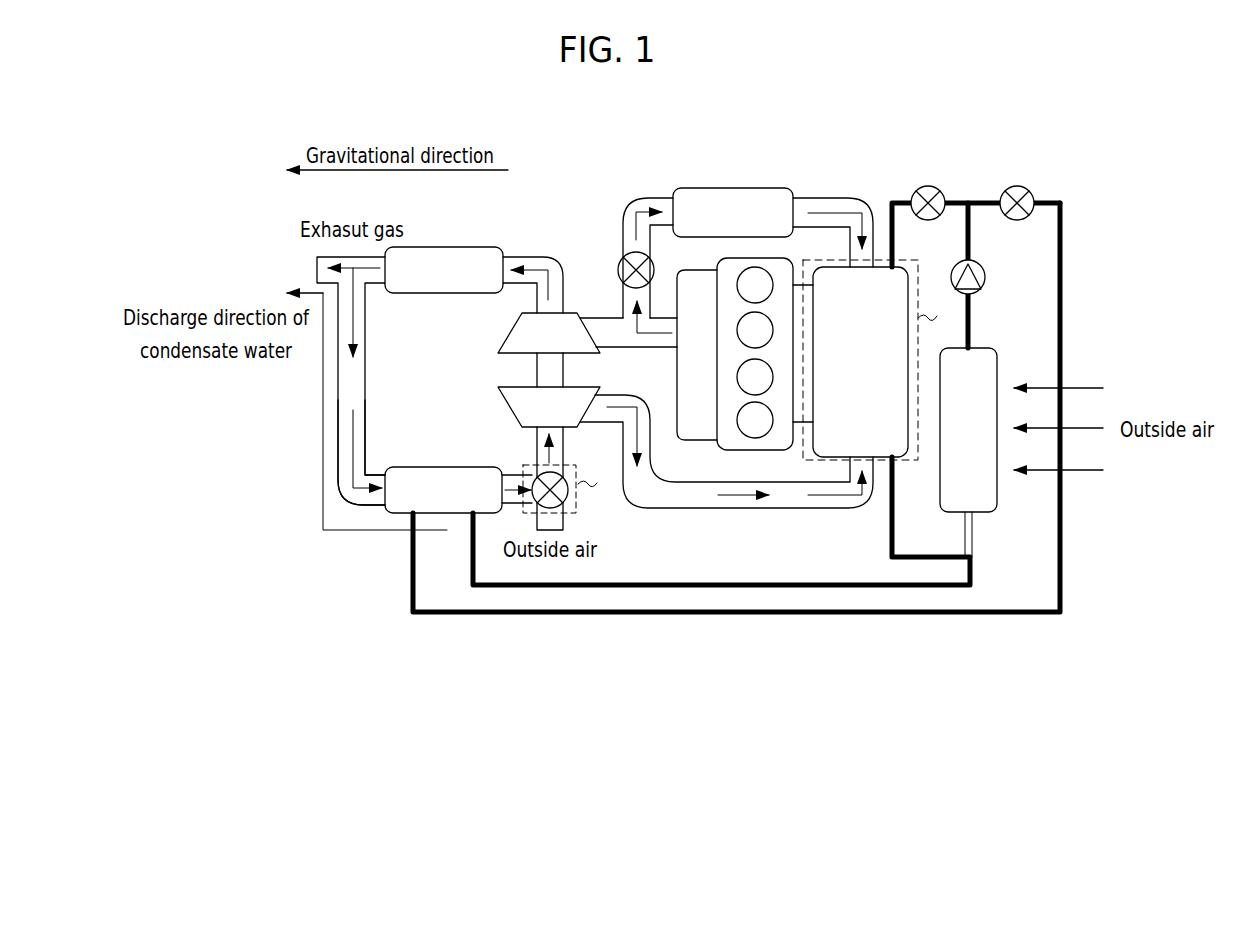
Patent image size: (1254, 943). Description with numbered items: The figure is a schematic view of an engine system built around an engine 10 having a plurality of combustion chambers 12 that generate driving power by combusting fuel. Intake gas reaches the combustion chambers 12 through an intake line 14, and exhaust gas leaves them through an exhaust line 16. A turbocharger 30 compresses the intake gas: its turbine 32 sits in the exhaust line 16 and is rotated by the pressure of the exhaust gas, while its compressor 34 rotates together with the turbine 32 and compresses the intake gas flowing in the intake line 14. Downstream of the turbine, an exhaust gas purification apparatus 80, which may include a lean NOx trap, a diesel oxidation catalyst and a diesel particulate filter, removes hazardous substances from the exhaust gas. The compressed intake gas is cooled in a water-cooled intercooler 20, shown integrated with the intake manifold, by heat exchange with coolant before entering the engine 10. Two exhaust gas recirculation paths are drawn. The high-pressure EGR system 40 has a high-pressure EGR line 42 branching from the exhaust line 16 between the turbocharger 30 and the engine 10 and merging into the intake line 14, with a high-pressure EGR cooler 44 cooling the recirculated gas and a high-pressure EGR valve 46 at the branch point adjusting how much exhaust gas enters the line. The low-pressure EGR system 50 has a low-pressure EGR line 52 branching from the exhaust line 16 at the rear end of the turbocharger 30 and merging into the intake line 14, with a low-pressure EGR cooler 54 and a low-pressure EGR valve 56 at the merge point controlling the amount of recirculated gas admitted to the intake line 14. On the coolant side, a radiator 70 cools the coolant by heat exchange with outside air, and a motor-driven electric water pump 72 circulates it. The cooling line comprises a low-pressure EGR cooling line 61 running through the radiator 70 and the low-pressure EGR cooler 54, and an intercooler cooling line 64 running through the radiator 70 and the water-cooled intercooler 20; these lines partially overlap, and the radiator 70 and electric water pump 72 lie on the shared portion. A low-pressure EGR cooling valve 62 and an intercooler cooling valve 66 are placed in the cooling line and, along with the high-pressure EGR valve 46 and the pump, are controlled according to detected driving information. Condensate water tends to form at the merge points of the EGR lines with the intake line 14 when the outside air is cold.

The engine 10 is at (746, 473).
The combustion chamber 12 is at (767, 438).
The intake line 14 is at (663, 512).
The exhaust line 16 is at (602, 310).
The water-cooled intercooler 20 is at (833, 274).
The turbocharger 30 is at (496, 370).
The turbine 32 is at (522, 331).
The compressor 34 is at (517, 407).
The high-pressure EGR system 40 is at (740, 134).
The high-pressure EGR line 42 is at (660, 200).
The high-pressure EGR cooler 44 is at (737, 188).
The high-pressure EGR valve 46 is at (618, 256).
The low-pressure EGR system 50 is at (242, 632).
The low-pressure EGR line 52 is at (338, 456).
The low-pressure EGR cooler 54 is at (385, 515).
The low-pressure EGR valve 56 is at (535, 497).
The low-pressure EGR cooling line 61 is at (947, 588).
The low-pressure EGR cooling valve 62 is at (1017, 186).
The intercooler cooling line 64 is at (892, 213).
The intercooler cooling valve 66 is at (928, 186).
The radiator 70 is at (995, 348).
The electric water pump 72 is at (977, 261).
The exhaust gas purification apparatus 80 is at (440, 247).